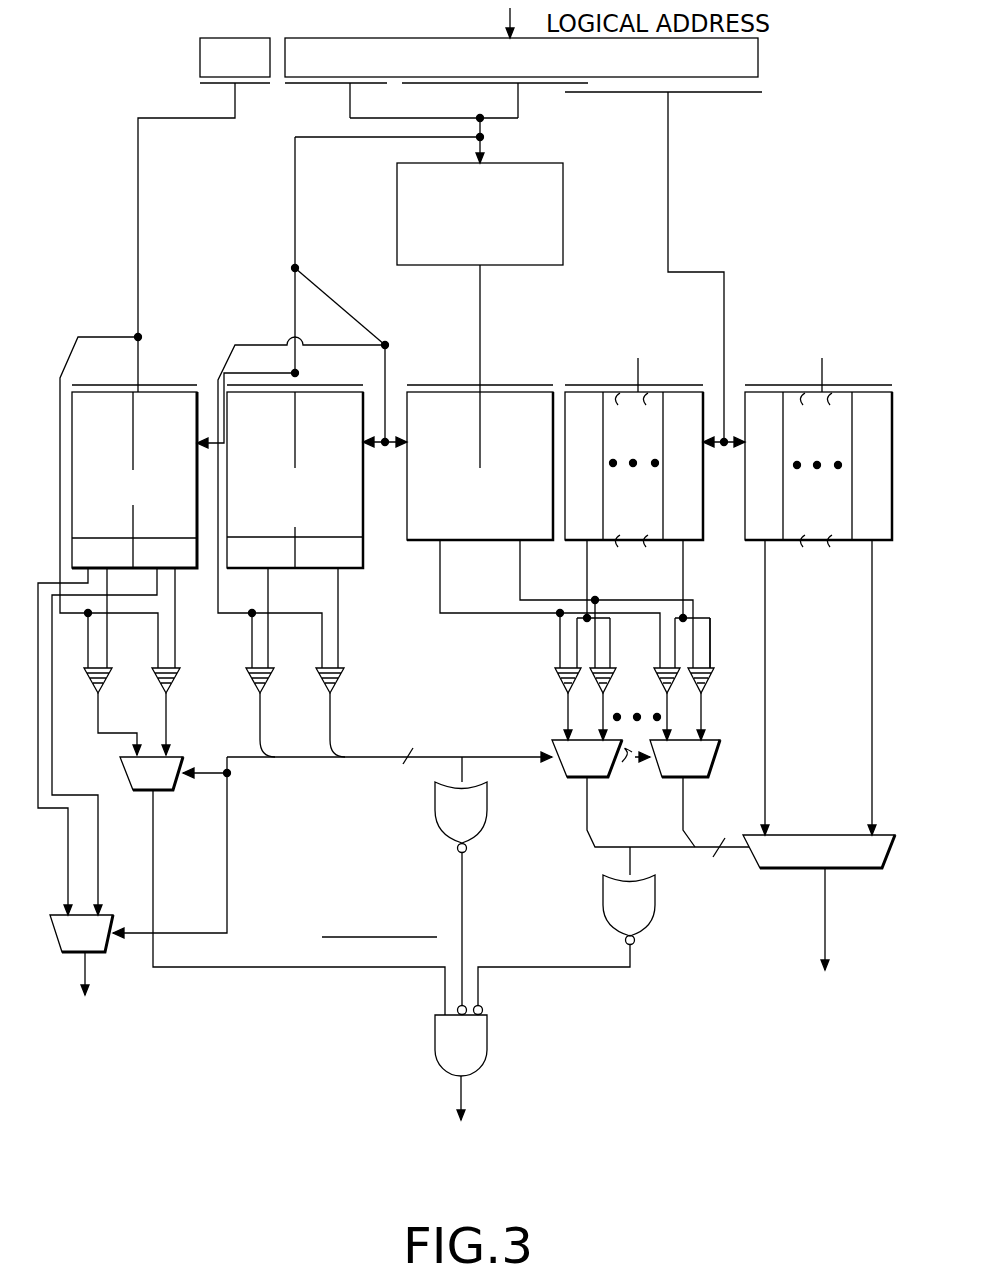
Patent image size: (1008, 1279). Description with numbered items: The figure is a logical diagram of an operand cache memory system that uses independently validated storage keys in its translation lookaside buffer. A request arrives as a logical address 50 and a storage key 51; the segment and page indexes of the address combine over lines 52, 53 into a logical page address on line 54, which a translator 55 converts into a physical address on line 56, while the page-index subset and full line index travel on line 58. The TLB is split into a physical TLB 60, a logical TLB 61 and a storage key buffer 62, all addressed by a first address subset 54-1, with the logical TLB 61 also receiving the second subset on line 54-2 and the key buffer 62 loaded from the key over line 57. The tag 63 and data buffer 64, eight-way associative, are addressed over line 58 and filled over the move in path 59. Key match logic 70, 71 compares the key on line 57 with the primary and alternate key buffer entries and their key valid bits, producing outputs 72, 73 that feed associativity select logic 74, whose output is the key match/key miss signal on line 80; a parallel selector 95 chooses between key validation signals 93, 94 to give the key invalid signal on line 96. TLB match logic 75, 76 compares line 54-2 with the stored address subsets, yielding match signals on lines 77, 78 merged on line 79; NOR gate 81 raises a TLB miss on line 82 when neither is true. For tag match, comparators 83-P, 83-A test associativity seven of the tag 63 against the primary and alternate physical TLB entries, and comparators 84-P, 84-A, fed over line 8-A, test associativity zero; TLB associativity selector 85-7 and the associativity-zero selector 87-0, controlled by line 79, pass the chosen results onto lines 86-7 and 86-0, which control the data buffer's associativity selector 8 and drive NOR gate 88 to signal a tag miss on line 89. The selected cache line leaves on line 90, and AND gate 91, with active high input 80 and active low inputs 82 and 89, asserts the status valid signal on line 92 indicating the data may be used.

The logical address 50 is at (760, 62).
The storage key 51 is at (200, 58).
The segment index line 52 is at (352, 118).
The page index line 53 is at (520, 118).
The logical page address line 54 is at (482, 137).
The first subset of logical address 54-1 is at (358, 313).
The second subset of logical address line 54-2 is at (297, 373).
The translator 55 is at (563, 190).
The physical address line 56 is at (482, 300).
The key line 57 is at (140, 192).
The logical line address line 58 is at (670, 212).
The move in path 59 is at (638, 368).
The physical TLB 60 is at (418, 545).
The logical TLB 61 is at (363, 525).
The storage key buffer 62 is at (199, 528).
The tag 63 is at (576, 543).
The data buffer 64 is at (860, 545).
The primary key match logic 70 is at (108, 686).
The alternate key match logic 71 is at (180, 688).
The primary key match output 72 is at (96, 742).
The alternate key match output 73 is at (200, 728).
The associativity select logic 74 is at (118, 778).
The primary TLB match logic 75 is at (262, 698).
The alternate TLB match logic 76 is at (340, 702).
The primary TLB match signal line 77 is at (262, 752).
The alternate TLB match signal line 78 is at (332, 748).
The merged TLB match signal line 79 is at (354, 760).
The key match/key miss signal line 80 is at (155, 855).
The NOR gate 81 is at (440, 818).
The TLB miss line 82 is at (464, 870).
The primary tag comparator for associativity 7 83-P is at (562, 685).
The alternate tag comparator for associativity 7 83-A is at (640, 694).
The primary tag comparator for associativity 0 84-P is at (660, 682).
The alternate tag comparator for associativity 0 84-A is at (701, 704).
The TLB associativity selector 85-7 is at (570, 780).
The tag match line for associativity 7 86-7 is at (588, 820).
The tag match multiplexer for associativity 0 87-0 is at (718, 760).
The tag match line for associativity 0 86-0 is at (686, 846).
The data output multiplexer 8 is at (880, 866).
The tag input line to comparator 8-A is at (716, 668).
The NOR gate 88 is at (604, 908).
The tag miss line 89 is at (612, 969).
The cache line output 90 is at (827, 933).
The AND gate 91 is at (489, 1037).
The status valid signal line 92 is at (463, 1093).
The primary key validation signal line 93 is at (40, 588).
The alternate key validation signal line 94 is at (52, 672).
The associativity selector for key validation 95 is at (112, 915).
The key invalid signal line 96 is at (87, 975).